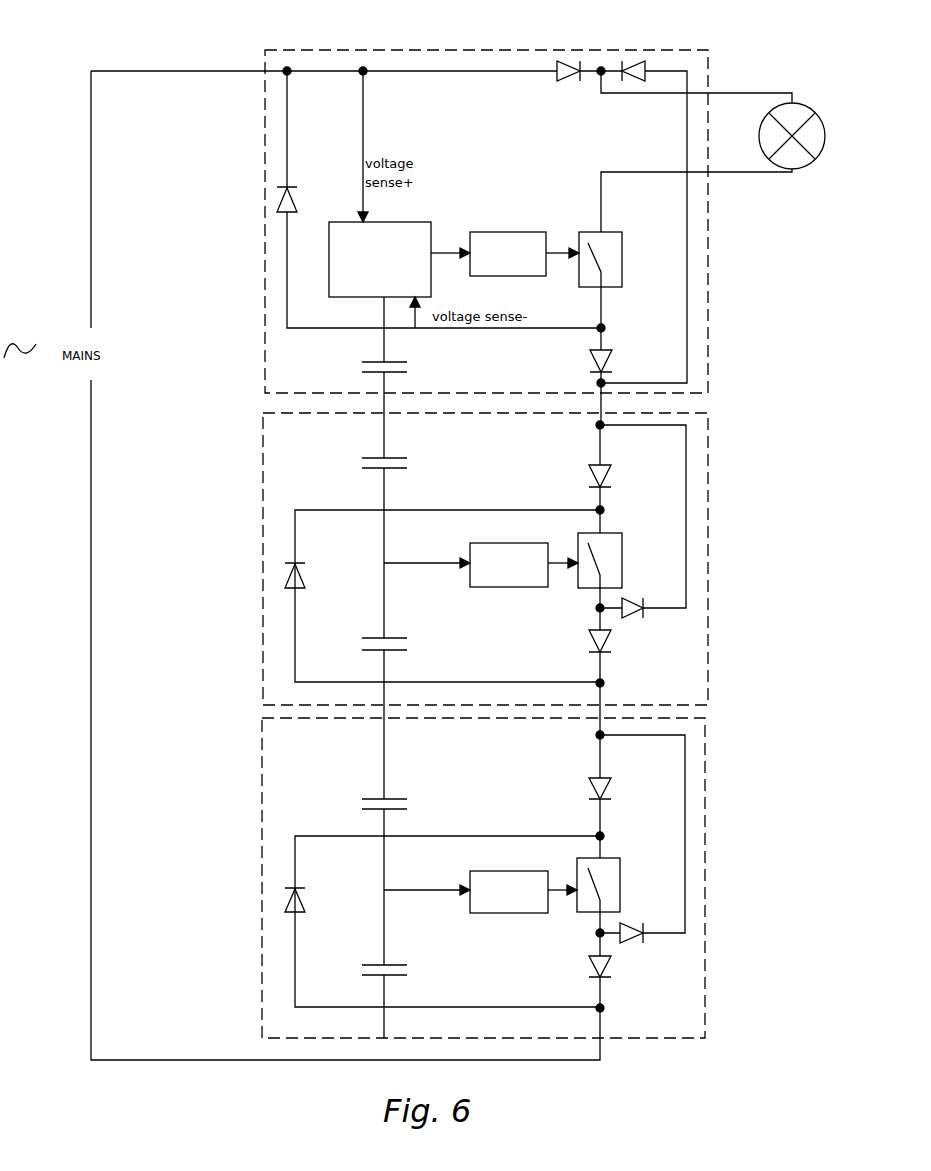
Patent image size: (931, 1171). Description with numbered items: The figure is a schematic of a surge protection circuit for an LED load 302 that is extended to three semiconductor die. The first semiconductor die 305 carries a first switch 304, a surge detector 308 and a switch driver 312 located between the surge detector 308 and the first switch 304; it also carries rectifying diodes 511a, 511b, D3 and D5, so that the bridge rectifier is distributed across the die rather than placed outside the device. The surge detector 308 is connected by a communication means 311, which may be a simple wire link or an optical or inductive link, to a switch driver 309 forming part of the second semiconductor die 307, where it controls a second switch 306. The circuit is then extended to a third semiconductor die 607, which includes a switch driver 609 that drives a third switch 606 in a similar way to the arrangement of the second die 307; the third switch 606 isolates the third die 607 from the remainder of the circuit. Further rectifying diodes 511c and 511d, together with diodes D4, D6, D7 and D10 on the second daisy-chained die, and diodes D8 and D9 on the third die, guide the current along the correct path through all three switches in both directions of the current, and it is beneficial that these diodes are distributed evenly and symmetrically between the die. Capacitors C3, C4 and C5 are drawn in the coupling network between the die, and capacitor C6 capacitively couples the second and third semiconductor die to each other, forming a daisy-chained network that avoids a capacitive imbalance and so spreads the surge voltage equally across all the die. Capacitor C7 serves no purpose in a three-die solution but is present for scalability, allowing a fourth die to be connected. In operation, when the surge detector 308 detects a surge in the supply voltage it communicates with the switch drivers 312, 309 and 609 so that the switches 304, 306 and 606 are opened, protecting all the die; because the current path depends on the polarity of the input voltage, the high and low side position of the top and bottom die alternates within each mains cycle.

The rectifying diode 511a is at (565, 85).
The rectifying diode 511b is at (638, 52).
The LED load 302 is at (820, 157).
The surge detector 308 is at (433, 240).
The first switch 304 is at (623, 277).
The first semiconductor die 305 is at (700, 382).
The switch driver 312 is at (527, 277).
The communication means 311 is at (384, 405).
The switch driver 309 is at (503, 540).
The second switch 306 is at (622, 563).
The second semiconductor die 307 is at (685, 697).
The switch driver 609 is at (470, 872).
The third switch 606 is at (620, 890).
The rectifying diode 511c is at (605, 975).
The rectifying diode 511d is at (655, 959).
The third semiconductor die 607 is at (683, 1025).
The diode D3 is at (613, 387).
The diode D4 is at (613, 479).
The diode D5 is at (438, 199).
The diode D6 is at (309, 575).
The diode D7 is at (613, 682).
The diode D8 is at (613, 796).
The zener diode D9 is at (309, 900).
The diode D10 is at (642, 616).
The capacitor C3 is at (398, 377).
The capacitor C4 is at (398, 546).
The capacitor C5 is at (398, 717).
The capacitor C6 is at (398, 880).
The capacitor C7 is at (398, 999).